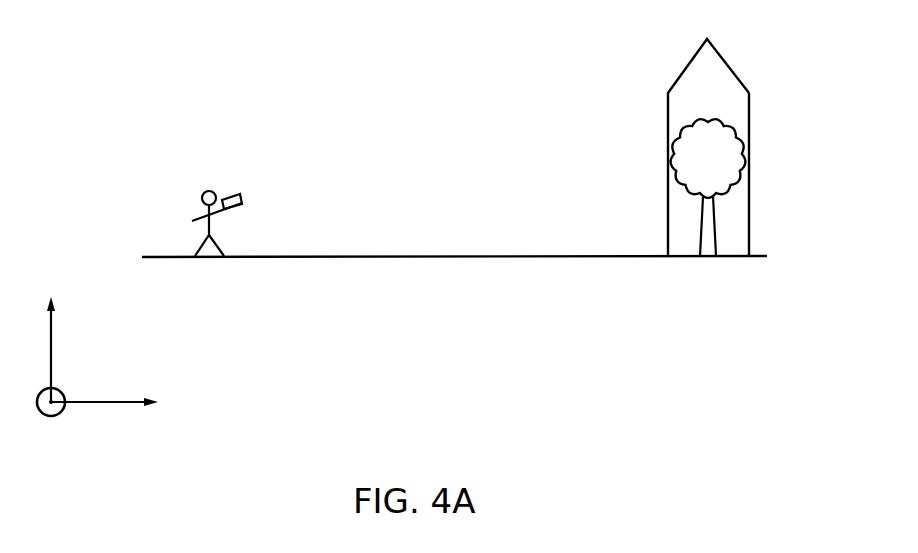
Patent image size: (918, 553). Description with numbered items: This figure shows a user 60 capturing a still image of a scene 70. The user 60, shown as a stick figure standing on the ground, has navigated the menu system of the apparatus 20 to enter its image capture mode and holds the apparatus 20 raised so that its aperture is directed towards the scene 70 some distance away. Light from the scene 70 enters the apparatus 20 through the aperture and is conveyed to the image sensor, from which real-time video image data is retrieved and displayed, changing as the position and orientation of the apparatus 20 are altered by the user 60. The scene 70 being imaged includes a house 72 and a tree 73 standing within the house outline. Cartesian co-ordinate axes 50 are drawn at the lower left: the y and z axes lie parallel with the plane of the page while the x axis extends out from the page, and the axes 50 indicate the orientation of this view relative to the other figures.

The apparatus 20 is at (240, 194).
The Cartesian co-ordinate axes 50 is at (90, 418).
The user 60 is at (196, 184).
The scene 70 is at (653, 72).
The house 72 is at (753, 118).
The tree 73 is at (736, 206).